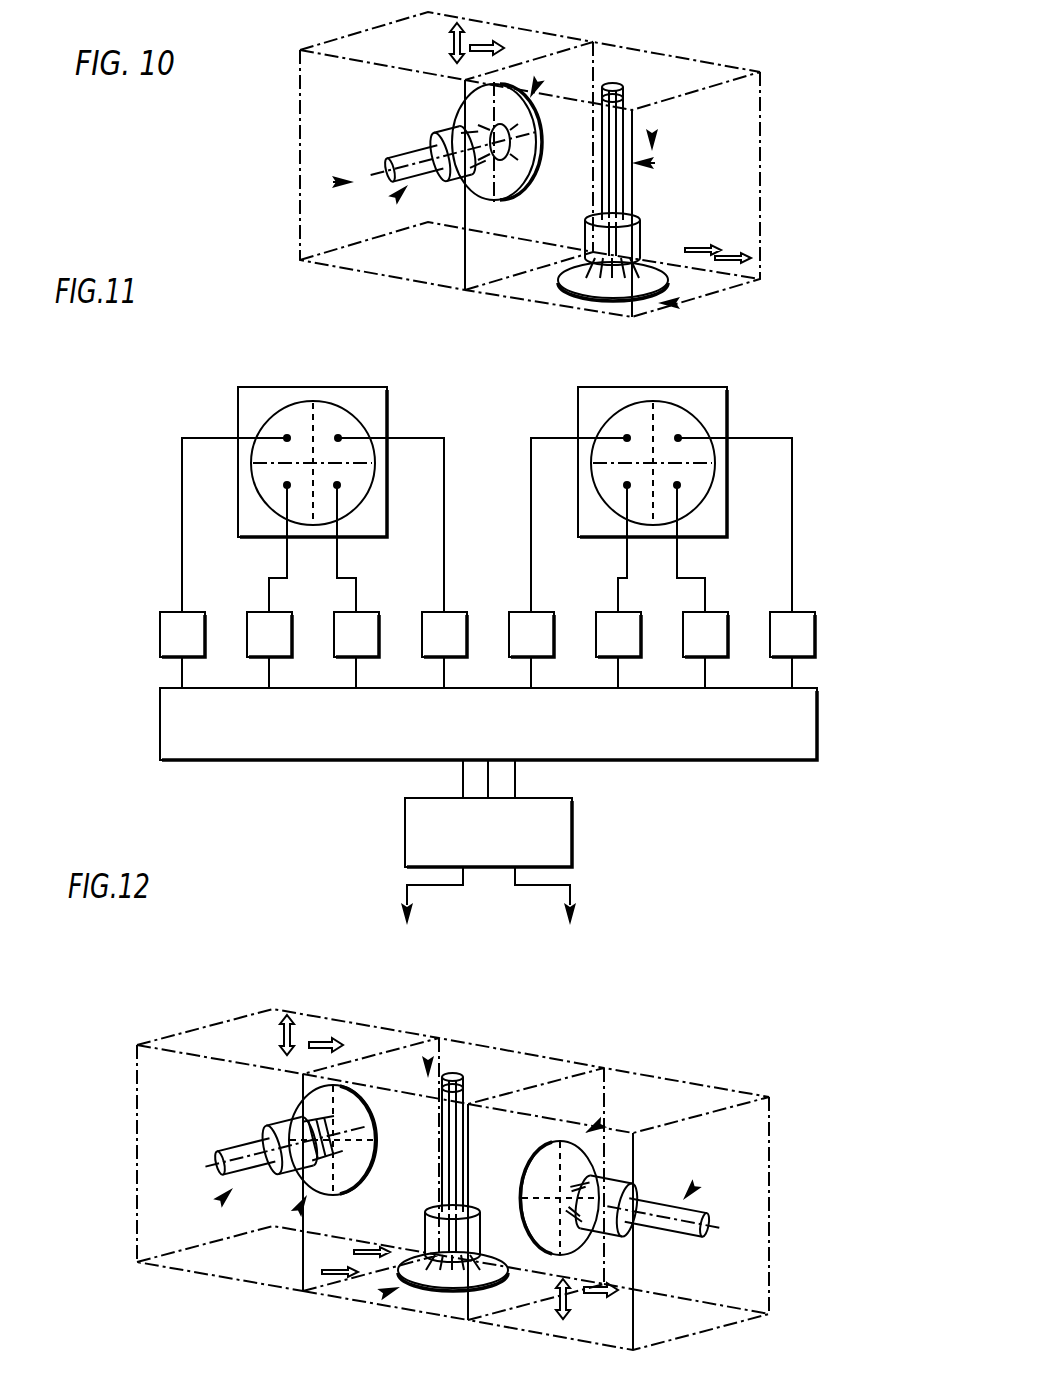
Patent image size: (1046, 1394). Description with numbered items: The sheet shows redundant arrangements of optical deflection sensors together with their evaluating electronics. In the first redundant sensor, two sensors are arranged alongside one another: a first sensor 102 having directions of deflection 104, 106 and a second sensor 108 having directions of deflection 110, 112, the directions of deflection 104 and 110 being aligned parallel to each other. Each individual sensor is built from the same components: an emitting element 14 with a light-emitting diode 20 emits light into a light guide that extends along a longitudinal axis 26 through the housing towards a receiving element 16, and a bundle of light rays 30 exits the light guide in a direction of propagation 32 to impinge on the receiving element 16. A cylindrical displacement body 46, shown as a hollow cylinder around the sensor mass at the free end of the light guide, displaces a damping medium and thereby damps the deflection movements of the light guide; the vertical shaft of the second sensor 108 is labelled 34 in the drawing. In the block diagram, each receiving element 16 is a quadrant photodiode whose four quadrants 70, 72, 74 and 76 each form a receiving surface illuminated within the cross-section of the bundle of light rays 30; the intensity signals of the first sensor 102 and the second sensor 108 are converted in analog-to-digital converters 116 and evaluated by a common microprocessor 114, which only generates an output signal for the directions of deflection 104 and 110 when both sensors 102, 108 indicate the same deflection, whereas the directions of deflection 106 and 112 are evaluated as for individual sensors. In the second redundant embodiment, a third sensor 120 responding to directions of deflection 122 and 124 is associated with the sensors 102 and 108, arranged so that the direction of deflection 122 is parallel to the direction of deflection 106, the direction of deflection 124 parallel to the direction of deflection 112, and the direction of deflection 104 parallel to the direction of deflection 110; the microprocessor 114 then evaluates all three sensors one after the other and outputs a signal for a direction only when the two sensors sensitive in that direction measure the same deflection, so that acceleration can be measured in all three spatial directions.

In FIG. 10, the emitting element 14 is at (394, 196).
In FIG. 12, the emitting element 14 is at (428, 1060).
In FIG. 10, the receiving element 16 is at (536, 88).
In FIG. 12, the receiving element 16 is at (296, 1215).
In FIG. 10, the light-emitting diode 20 is at (428, 152).
In FIG. 10, the longitudinal axis 26 is at (388, 168).
In FIG. 12, the longitudinal axis 26 is at (213, 1170).
In FIG. 10, the bundle of light rays 30 is at (496, 190).
In FIG. 12, the bundle of light rays 30 is at (353, 1143).
In FIG. 10, the direction of propagation 32 is at (332, 182).
In FIG. 10, the vertical shaft 34 is at (602, 160).
In FIG. 10, the cylindrical displacement body 46 is at (435, 172).
In FIG. 11, the quadrant 70 is at (332, 415).
In FIG. 11, the quadrant 72 is at (283, 412).
In FIG. 11, the quadrant 74 is at (270, 493).
In FIG. 11, the quadrant 76 is at (355, 495).
In FIG. 10, the first sensor 102 is at (290, 183).
In FIG. 11, the first sensor 102 is at (215, 377).
In FIG. 12, the first sensor 102 is at (200, 1015).
In FIG. 10, the direction of deflection 104 is at (472, 52).
In FIG. 12, the direction of deflection 104 is at (330, 1040).
In FIG. 10, the direction of deflection 106 is at (447, 43).
In FIG. 12, the direction of deflection 106 is at (282, 1025).
In FIG. 10, the second sensor 108 is at (770, 148).
In FIG. 11, the second sensor 108 is at (560, 383).
In FIG. 12, the second sensor 108 is at (522, 1055).
In FIG. 10, the direction of deflection 110 is at (748, 257).
In FIG. 12, the direction of deflection 110 is at (330, 1280).
In FIG. 10, the direction of deflection 112 is at (700, 248).
In FIG. 12, the direction of deflection 112 is at (372, 1248).
In FIG. 11, the common microprocessor 114 is at (168, 740).
In FIG. 11, the analog-to-digital converters 116 is at (165, 625).
In FIG. 12, the third sensor 120 is at (742, 1088).
In FIG. 12, the direction of deflection 122 is at (552, 1305).
In FIG. 12, the direction of deflection 124 is at (632, 1292).